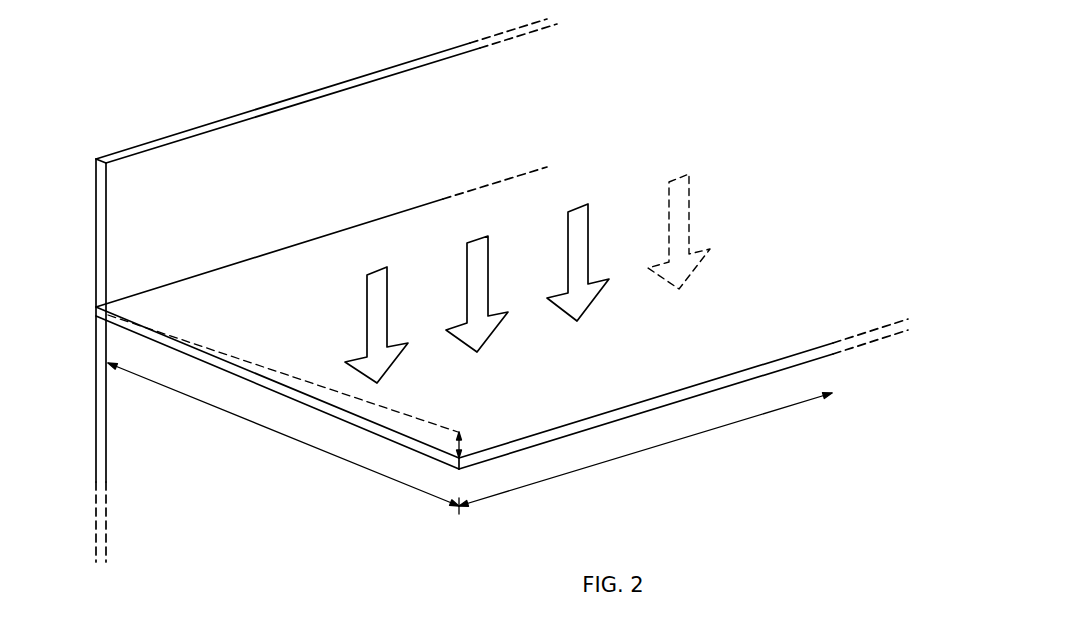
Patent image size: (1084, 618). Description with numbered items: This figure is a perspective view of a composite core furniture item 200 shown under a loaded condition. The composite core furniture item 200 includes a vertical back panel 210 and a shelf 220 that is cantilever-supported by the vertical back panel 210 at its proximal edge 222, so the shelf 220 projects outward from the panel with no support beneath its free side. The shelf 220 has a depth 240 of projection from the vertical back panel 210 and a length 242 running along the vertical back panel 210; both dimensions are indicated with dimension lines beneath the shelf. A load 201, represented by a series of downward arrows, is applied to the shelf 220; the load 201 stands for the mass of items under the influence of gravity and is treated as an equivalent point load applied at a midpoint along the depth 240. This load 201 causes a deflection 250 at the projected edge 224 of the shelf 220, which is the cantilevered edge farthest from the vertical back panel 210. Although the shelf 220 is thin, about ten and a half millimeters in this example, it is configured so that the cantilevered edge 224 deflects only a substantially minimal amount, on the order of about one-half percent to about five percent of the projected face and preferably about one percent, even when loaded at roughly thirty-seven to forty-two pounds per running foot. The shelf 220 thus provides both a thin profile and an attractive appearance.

The composite core furniture item 200 is at (152, 63).
The load 201 is at (357, 298).
The vertical back panel 210 is at (223, 248).
The shelf 220 is at (502, 318).
The proximal edge 222 is at (196, 275).
The projected edge 224 is at (617, 410).
The depth 240 is at (188, 397).
The length 242 is at (685, 437).
The deflection 250 is at (462, 445).